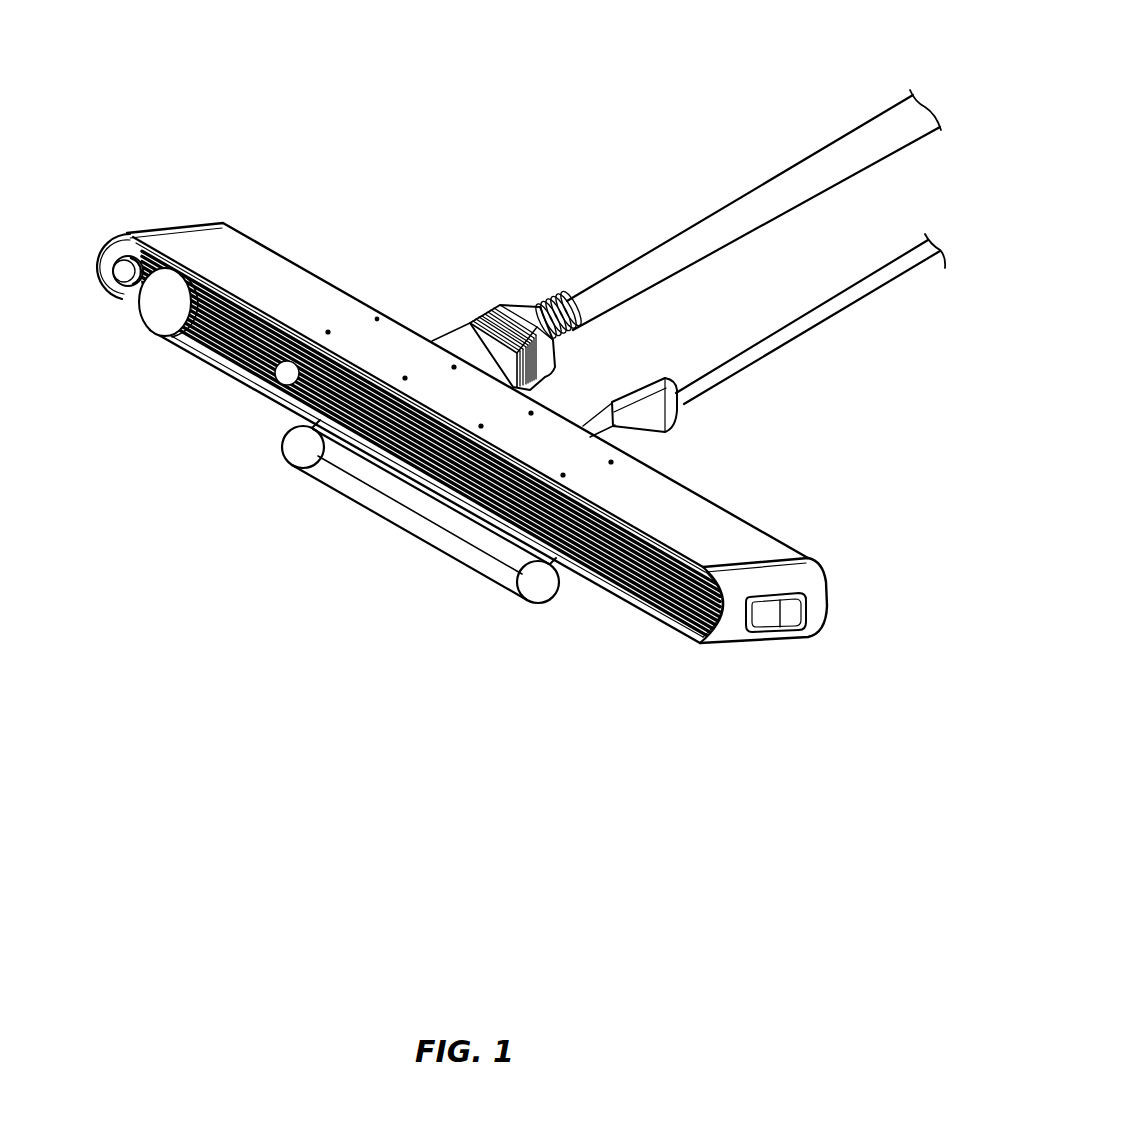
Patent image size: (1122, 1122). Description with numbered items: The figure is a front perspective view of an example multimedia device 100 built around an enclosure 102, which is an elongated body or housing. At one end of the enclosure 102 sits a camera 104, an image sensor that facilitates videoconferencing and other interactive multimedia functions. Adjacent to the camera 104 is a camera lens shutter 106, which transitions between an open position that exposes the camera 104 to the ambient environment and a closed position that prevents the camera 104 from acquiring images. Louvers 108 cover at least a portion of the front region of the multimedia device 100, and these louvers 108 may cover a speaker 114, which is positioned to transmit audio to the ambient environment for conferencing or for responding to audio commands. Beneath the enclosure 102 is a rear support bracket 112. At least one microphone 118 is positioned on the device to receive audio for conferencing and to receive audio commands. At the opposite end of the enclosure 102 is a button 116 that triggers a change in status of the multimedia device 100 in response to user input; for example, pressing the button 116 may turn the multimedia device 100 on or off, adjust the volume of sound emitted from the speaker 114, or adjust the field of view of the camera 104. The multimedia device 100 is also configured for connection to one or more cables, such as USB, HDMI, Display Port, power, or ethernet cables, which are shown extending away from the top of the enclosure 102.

The multimedia device 100 is at (255, 75).
The enclosure 102 is at (182, 227).
The camera 104 is at (111, 267).
The camera lens shutter 106 is at (148, 332).
The louvers 108 is at (233, 345).
The rear support bracket 112 is at (283, 452).
The speaker 114 is at (278, 388).
The button 116 is at (793, 627).
The microphone 118 is at (377, 318).